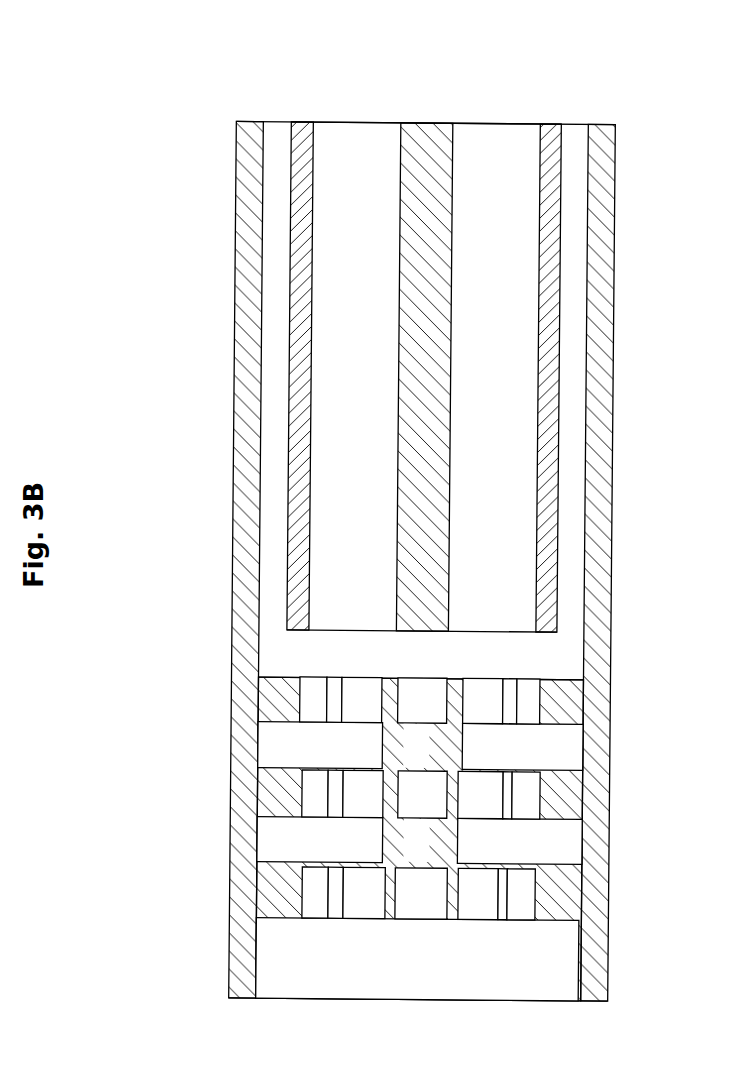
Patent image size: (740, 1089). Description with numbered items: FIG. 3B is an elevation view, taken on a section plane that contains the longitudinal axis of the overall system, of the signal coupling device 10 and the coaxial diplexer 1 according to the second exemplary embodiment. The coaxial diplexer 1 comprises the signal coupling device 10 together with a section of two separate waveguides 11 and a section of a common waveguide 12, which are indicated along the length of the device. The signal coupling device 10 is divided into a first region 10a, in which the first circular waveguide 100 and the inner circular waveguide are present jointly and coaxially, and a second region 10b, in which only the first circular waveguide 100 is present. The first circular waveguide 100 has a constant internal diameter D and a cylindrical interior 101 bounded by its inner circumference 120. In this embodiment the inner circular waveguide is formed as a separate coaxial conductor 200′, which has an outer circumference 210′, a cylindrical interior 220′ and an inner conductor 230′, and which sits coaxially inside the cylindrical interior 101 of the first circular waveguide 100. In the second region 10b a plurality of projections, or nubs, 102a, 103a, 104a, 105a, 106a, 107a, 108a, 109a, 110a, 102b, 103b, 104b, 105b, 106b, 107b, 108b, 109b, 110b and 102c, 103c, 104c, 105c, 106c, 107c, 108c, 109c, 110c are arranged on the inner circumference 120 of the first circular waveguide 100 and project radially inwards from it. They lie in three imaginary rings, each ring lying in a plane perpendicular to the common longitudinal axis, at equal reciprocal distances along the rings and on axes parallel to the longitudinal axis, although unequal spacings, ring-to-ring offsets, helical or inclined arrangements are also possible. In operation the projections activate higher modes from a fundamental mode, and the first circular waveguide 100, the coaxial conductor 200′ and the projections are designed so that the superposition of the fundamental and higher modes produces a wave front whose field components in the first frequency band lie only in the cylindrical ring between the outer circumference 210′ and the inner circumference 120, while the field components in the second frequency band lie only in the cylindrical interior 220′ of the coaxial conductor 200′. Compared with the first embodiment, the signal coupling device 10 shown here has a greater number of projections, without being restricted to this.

The coaxial diplexer 1 is at (111, 541).
The signal coupling device 10 is at (213, 390).
The first region 10a is at (648, 436).
The second region 10b is at (648, 673).
The two separate waveguides 11 is at (213, 123).
The common waveguide 12 is at (213, 926).
The first circular waveguide 100 is at (421, 540).
The cylindrical interior 101 is at (546, 646).
The inner circumference 120 is at (260, 654).
The coaxial conductor 200′ is at (424, 354).
The outer circumference 210′ is at (288, 556).
The cylindrical interior 220′ is at (409, 377).
The inner conductor 230′ is at (417, 441).
The internal diameter D is at (262, 70).
The projection 102a is at (417, 959).
The projection 103a is at (312, 917).
The projection 104a is at (335, 917).
The projection 105a is at (363, 917).
The projection 106a is at (420, 918).
The projection 107a is at (477, 918).
The projection 108a is at (502, 919).
The projection 109a is at (520, 919).
The projection 110a is at (557, 946).
The projection 102b is at (320, 840).
The projection 103b is at (312, 816).
The projection 104b is at (335, 816).
The projection 105b is at (362, 816).
The projection 106b is at (422, 817).
The projection 107b is at (480, 817).
The projection 108b is at (500, 818).
The projection 109b is at (524, 818).
The projection 110b is at (519, 841).
The projection 102c is at (320, 745).
The projection 103c is at (310, 722).
The projection 104c is at (332, 722).
The projection 105c is at (361, 722).
The projection 106c is at (422, 723).
The projection 107c is at (482, 723).
The projection 108c is at (504, 724).
The projection 109c is at (526, 724).
The projection 110c is at (522, 746).